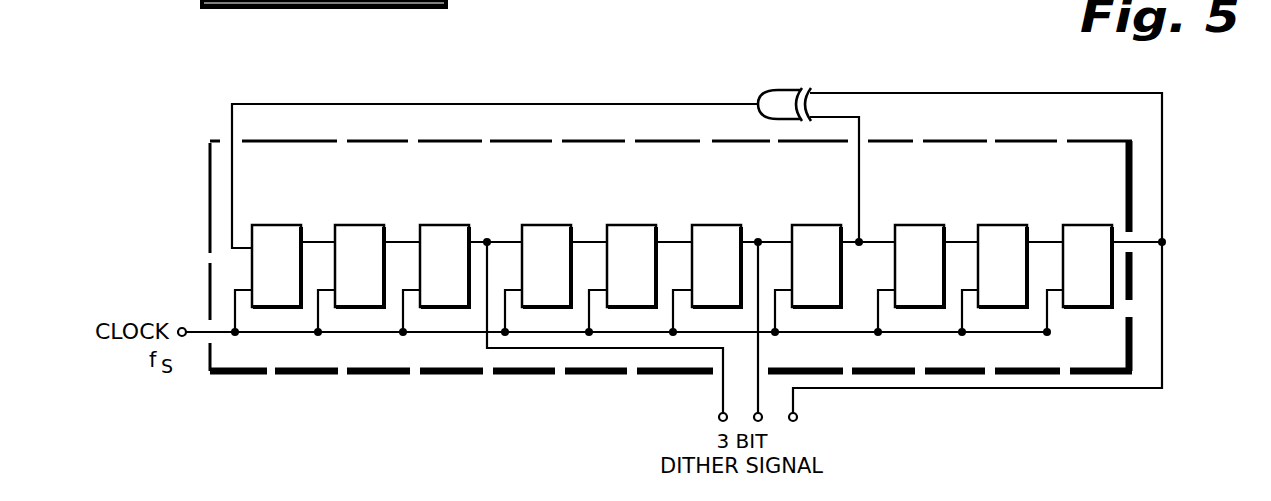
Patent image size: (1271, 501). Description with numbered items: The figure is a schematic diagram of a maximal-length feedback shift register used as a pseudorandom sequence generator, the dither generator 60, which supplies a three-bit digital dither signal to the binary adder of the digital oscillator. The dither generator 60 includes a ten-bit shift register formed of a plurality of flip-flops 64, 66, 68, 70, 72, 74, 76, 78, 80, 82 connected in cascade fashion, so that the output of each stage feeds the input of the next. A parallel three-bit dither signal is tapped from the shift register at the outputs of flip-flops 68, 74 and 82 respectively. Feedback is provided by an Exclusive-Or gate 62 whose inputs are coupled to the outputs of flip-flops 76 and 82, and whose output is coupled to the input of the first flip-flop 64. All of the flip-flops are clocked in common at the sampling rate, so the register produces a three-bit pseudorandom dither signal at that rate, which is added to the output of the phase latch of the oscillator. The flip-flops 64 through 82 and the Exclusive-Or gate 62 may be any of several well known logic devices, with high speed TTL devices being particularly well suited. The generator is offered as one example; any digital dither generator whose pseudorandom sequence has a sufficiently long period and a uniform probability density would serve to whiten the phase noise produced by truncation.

The dither generator 60 is at (1030, 140).
The Exclusive-Or gate 62 is at (795, 89).
The flip-flop 64 is at (283, 224).
The flip-flop 66 is at (366, 224).
The flip-flop 68 is at (451, 224).
The flip-flop 70 is at (553, 224).
The flip-flop 72 is at (638, 224).
The flip-flop 74 is at (723, 224).
The flip-flop 76 is at (822, 225).
The flip-flop 78 is at (926, 224).
The flip-flop 80 is at (1009, 224).
The flip-flop 82 is at (1087, 225).